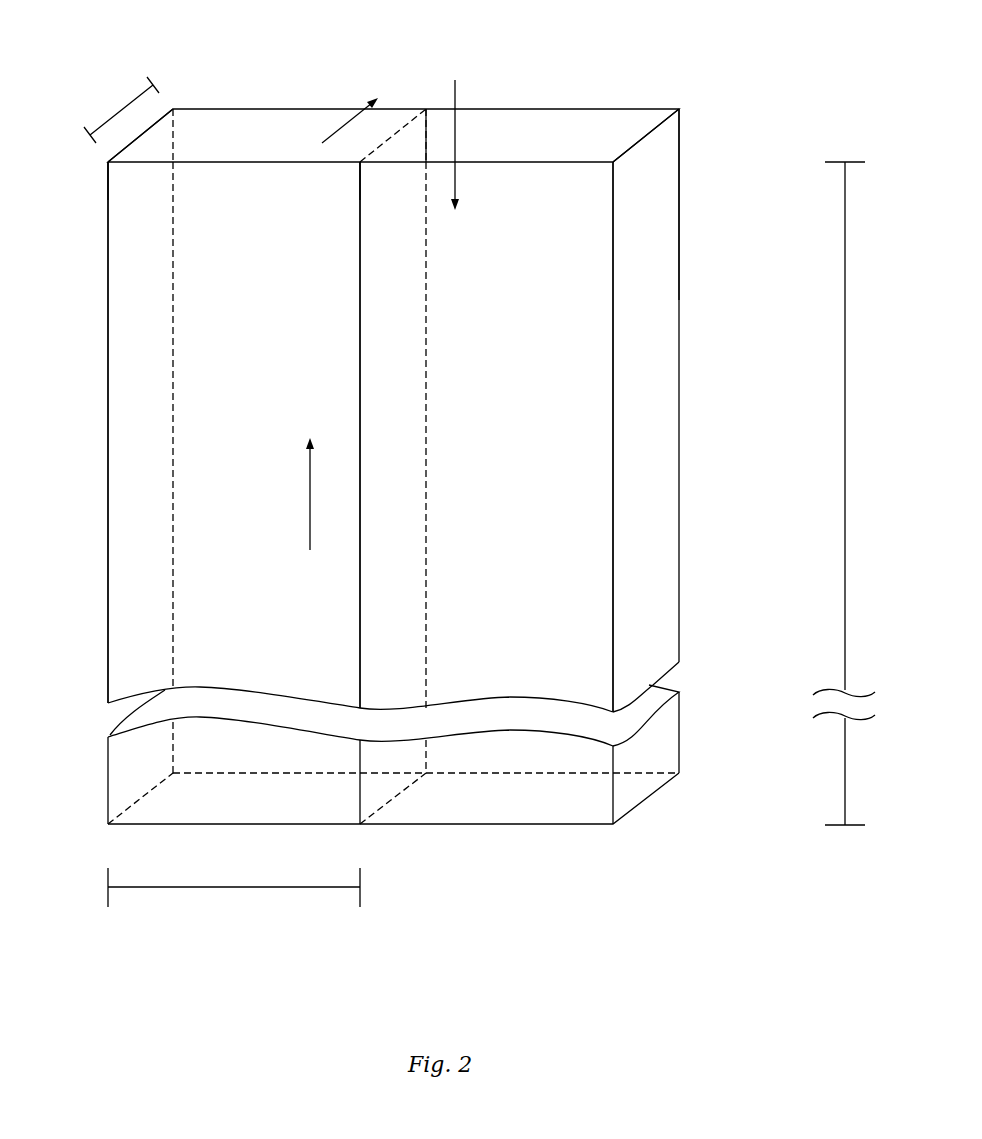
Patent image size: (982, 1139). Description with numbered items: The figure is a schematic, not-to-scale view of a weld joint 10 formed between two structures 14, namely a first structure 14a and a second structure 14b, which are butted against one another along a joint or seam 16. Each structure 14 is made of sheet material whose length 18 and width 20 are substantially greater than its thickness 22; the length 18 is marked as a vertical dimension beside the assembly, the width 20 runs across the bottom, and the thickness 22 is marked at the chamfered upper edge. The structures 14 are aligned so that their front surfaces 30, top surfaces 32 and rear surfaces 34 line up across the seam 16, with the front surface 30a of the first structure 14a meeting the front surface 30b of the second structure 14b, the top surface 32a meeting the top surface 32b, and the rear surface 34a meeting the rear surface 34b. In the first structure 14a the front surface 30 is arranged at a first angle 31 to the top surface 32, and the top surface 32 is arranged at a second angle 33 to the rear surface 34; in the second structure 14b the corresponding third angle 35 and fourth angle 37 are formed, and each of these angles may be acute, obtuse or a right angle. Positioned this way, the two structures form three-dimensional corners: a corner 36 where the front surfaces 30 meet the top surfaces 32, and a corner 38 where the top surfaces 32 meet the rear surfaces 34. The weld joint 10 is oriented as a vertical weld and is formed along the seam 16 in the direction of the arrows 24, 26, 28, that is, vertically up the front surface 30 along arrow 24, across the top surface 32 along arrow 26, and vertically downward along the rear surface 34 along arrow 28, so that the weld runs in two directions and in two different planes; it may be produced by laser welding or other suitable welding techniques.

The weld joint 10 is at (428, 75).
The structure 14 is at (133, 267).
The first structure 14a is at (130, 453).
The second structure 14b is at (585, 455).
The seam 16 is at (357, 244).
The length 18 is at (845, 407).
The width 20 is at (230, 888).
The thickness 22 is at (112, 117).
The arrow 24 is at (305, 502).
The arrow 26 is at (350, 118).
The arrow 28 is at (456, 147).
The front surface 30 is at (263, 380).
The first panel portion 30a is at (269, 583).
The second panel portion 30b is at (542, 583).
The first angle 31 is at (108, 182).
The top surface 32 is at (233, 149).
The first top panel portion 32a is at (314, 149).
The second top panel portion 32b is at (638, 143).
The second angle 33 is at (175, 128).
The rear surface 34 is at (686, 126).
The first top panel section 34a is at (240, 240).
The second top panel section 34b is at (562, 240).
The third angle 35 is at (363, 165).
The corner 36 is at (350, 154).
The fourth angle 37 is at (425, 117).
The corner 38 is at (429, 104).